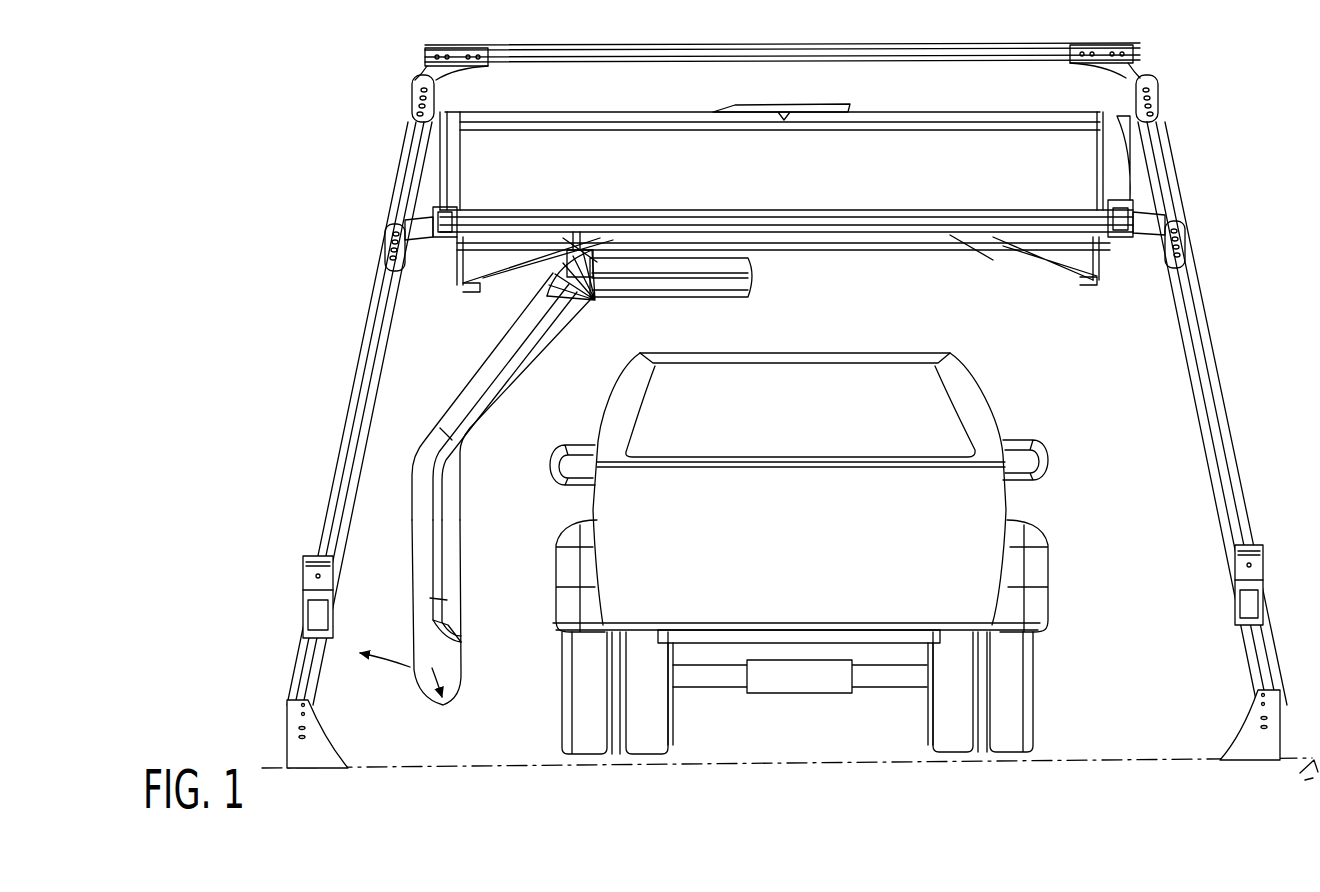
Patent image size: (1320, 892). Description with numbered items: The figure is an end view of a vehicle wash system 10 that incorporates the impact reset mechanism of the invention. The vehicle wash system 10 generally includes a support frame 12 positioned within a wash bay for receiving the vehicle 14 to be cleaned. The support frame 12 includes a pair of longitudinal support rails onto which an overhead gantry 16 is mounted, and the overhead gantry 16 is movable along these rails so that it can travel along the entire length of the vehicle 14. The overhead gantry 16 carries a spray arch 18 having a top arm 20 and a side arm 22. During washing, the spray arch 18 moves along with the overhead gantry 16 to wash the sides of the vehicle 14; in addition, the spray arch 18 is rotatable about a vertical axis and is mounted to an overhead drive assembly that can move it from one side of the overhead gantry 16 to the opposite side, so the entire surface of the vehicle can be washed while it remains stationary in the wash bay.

The vehicle wash system 10 is at (1218, 236).
The support frame 12 is at (1232, 427).
The vehicle 14 is at (987, 409).
The overhead gantry 16 is at (567, 157).
The spray arch 18 is at (459, 362).
The top arm 20 is at (710, 295).
The side arm 22 is at (447, 546).